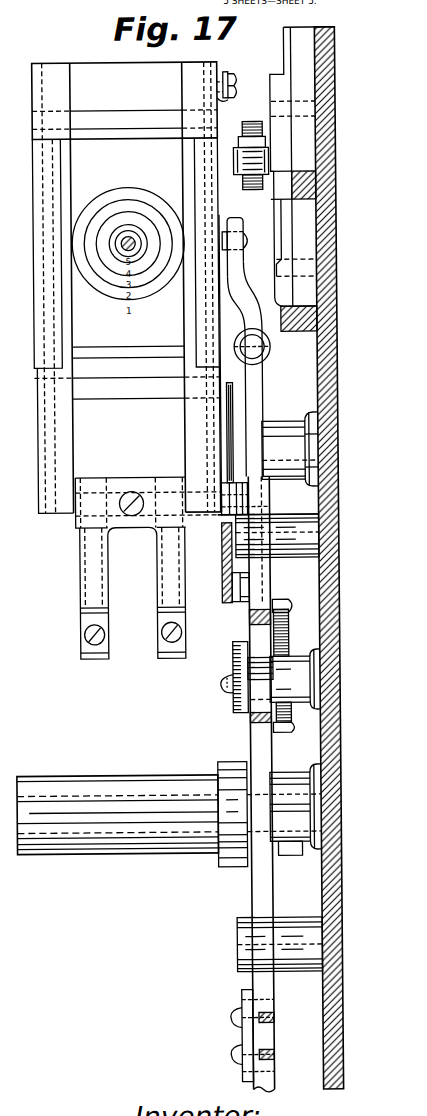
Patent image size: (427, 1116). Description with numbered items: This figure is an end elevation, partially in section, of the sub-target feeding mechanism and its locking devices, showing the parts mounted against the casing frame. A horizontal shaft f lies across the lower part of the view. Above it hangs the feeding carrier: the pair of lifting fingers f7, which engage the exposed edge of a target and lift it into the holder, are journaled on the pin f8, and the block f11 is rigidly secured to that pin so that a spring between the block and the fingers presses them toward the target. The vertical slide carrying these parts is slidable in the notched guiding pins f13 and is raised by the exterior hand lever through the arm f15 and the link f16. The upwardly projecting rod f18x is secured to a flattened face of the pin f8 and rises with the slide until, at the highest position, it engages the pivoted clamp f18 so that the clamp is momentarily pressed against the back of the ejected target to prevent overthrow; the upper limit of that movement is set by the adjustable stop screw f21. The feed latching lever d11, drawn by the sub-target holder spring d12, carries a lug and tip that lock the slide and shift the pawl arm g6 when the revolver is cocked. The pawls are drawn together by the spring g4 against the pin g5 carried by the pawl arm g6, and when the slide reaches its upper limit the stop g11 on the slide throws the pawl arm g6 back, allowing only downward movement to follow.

The shaft f is at (162, 776).
The lifting fingers f7 is at (80, 582).
The pin f8 is at (209, 513).
The block f11 is at (103, 538).
The notched guiding pins f13 is at (295, 552).
The arm f15 is at (222, 560).
The link f16 is at (240, 603).
The pivoted clamp f18 is at (232, 70).
The upwardly projecting rod f18x is at (235, 408).
The adjustable stop screw f21 is at (250, 122).
The feed latching lever d11 is at (265, 372).
The sub-target holder spring d12 is at (272, 350).
The spring g4 is at (305, 722).
The pin g5 is at (258, 680).
The pawl arm g6 is at (232, 652).
The stop g11 is at (238, 992).